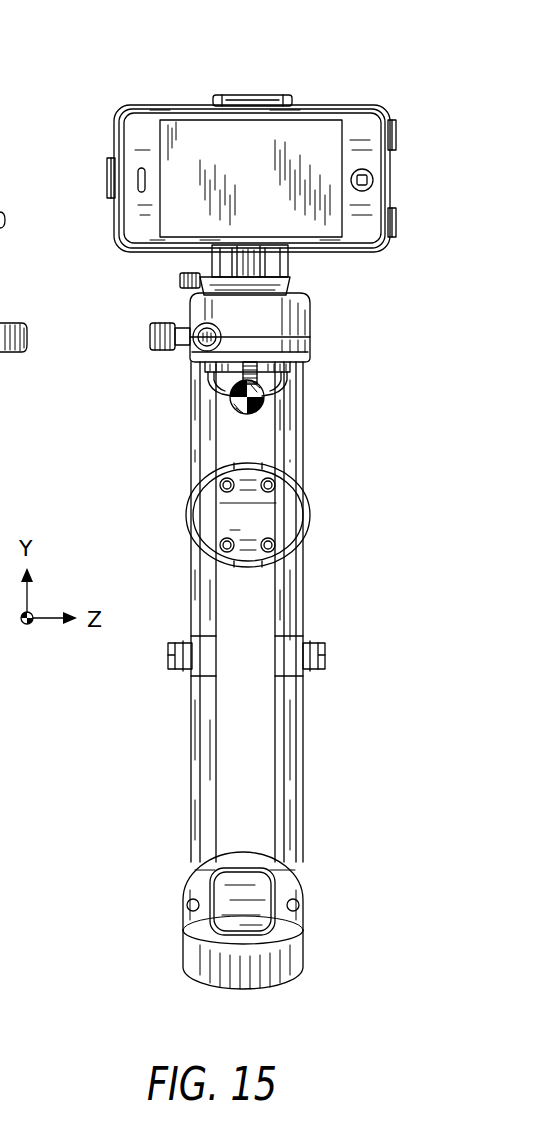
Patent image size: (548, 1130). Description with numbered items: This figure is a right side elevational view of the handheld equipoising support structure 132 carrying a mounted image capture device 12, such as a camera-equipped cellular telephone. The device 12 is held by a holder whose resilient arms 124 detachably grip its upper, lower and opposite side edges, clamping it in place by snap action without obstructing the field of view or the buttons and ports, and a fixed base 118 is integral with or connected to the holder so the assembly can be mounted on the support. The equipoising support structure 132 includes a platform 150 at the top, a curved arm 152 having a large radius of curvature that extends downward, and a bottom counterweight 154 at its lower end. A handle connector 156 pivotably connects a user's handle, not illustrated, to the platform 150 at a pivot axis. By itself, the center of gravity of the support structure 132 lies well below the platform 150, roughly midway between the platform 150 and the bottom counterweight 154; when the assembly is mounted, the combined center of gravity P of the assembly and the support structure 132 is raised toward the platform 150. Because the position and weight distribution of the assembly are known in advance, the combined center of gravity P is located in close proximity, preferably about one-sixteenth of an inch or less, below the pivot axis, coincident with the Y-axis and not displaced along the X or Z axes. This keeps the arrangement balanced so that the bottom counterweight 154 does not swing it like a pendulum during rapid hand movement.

The image capture device 12 is at (139, 130).
The arms 124 is at (250, 95).
The fixed base 118 is at (294, 267).
The platform 150 is at (295, 315).
The handle connector 156 is at (213, 375).
The combined center of gravity P is at (268, 414).
The curved arm 152 is at (290, 600).
The bottom counterweight 154 is at (290, 875).
The handheld equipoising support structure 132 is at (241, 617).